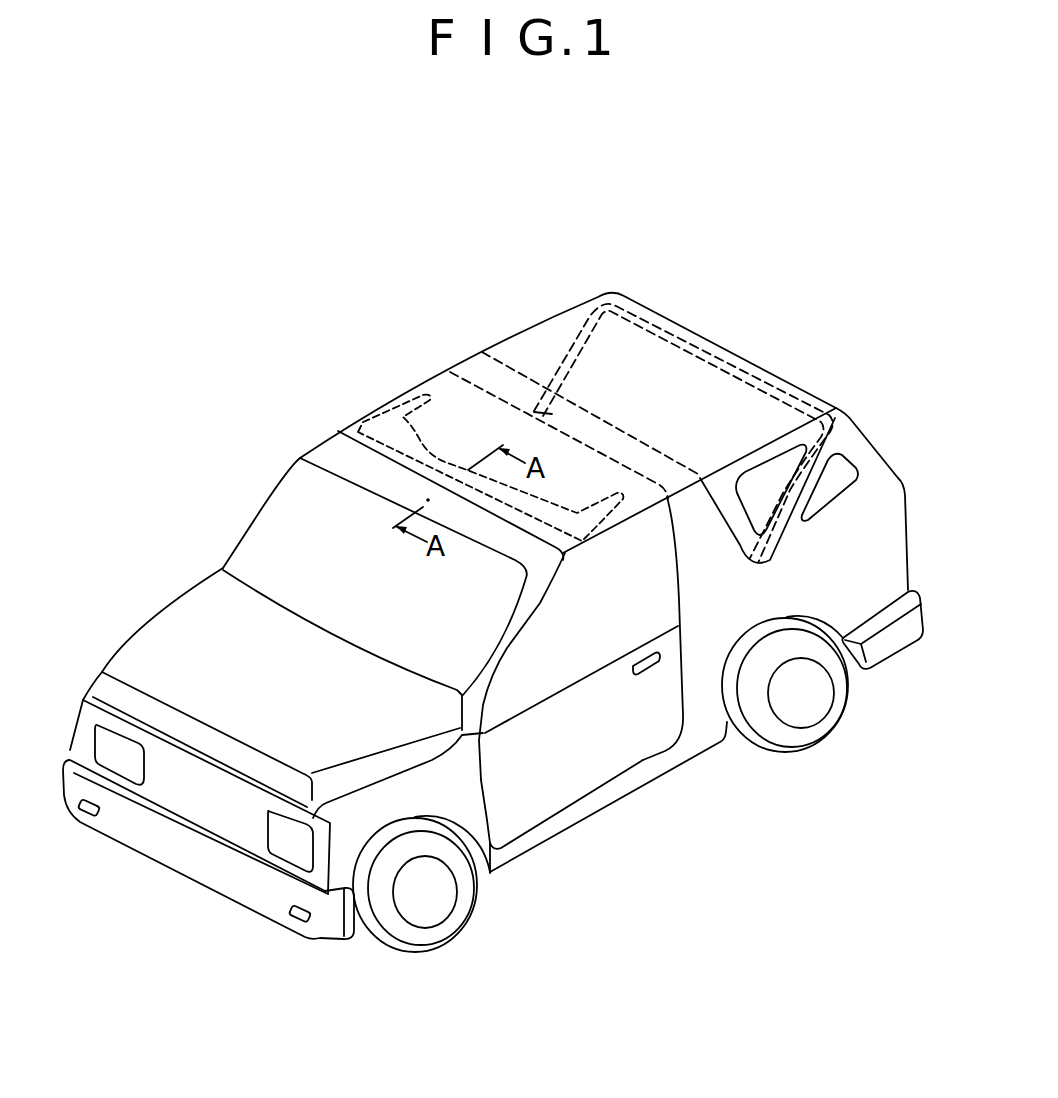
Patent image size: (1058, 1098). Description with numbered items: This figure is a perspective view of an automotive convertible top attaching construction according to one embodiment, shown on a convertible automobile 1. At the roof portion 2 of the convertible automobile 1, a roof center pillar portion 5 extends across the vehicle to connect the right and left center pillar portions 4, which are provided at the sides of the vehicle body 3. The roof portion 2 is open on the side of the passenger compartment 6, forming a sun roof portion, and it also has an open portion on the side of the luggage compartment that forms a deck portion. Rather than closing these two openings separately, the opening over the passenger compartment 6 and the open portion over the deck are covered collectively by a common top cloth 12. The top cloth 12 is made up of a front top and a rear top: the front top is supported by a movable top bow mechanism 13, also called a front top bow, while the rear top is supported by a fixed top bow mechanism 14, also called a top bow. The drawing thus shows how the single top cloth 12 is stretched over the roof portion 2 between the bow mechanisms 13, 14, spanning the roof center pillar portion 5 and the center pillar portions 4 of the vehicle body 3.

The convertible automobile 1 is at (628, 293).
The roof portion 2 is at (663, 348).
The vehicle body 3 is at (880, 527).
The center pillar portion 4 is at (707, 530).
The roof center pillar portion 5 is at (640, 443).
The passenger compartment 6 is at (565, 668).
The top cloth 12 is at (550, 335).
The movable top bow mechanism 13 is at (380, 427).
The fixed top bow mechanism 14 is at (792, 390).